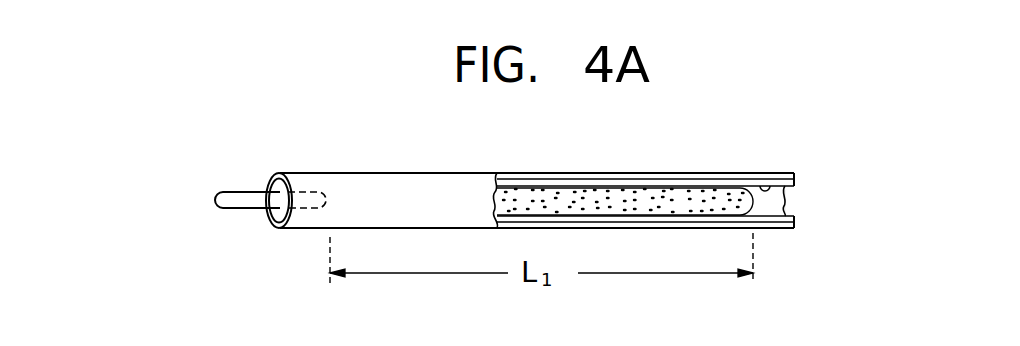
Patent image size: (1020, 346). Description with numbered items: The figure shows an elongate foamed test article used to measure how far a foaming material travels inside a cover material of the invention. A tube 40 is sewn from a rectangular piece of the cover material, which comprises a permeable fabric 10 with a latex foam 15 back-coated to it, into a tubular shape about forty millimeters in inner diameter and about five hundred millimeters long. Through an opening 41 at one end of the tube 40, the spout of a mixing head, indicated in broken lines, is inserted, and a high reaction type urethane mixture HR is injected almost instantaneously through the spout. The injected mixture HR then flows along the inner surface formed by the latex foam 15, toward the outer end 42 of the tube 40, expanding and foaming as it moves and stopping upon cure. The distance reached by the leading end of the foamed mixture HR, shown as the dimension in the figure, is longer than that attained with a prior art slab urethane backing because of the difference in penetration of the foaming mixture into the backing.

The tube 40 is at (400, 172).
The opening 41 is at (274, 225).
The permeable fabric 10 is at (590, 172).
The high reaction type urethane mixture HR is at (683, 195).
The latex foam 15 is at (778, 186).
The outer end 42 is at (785, 200).